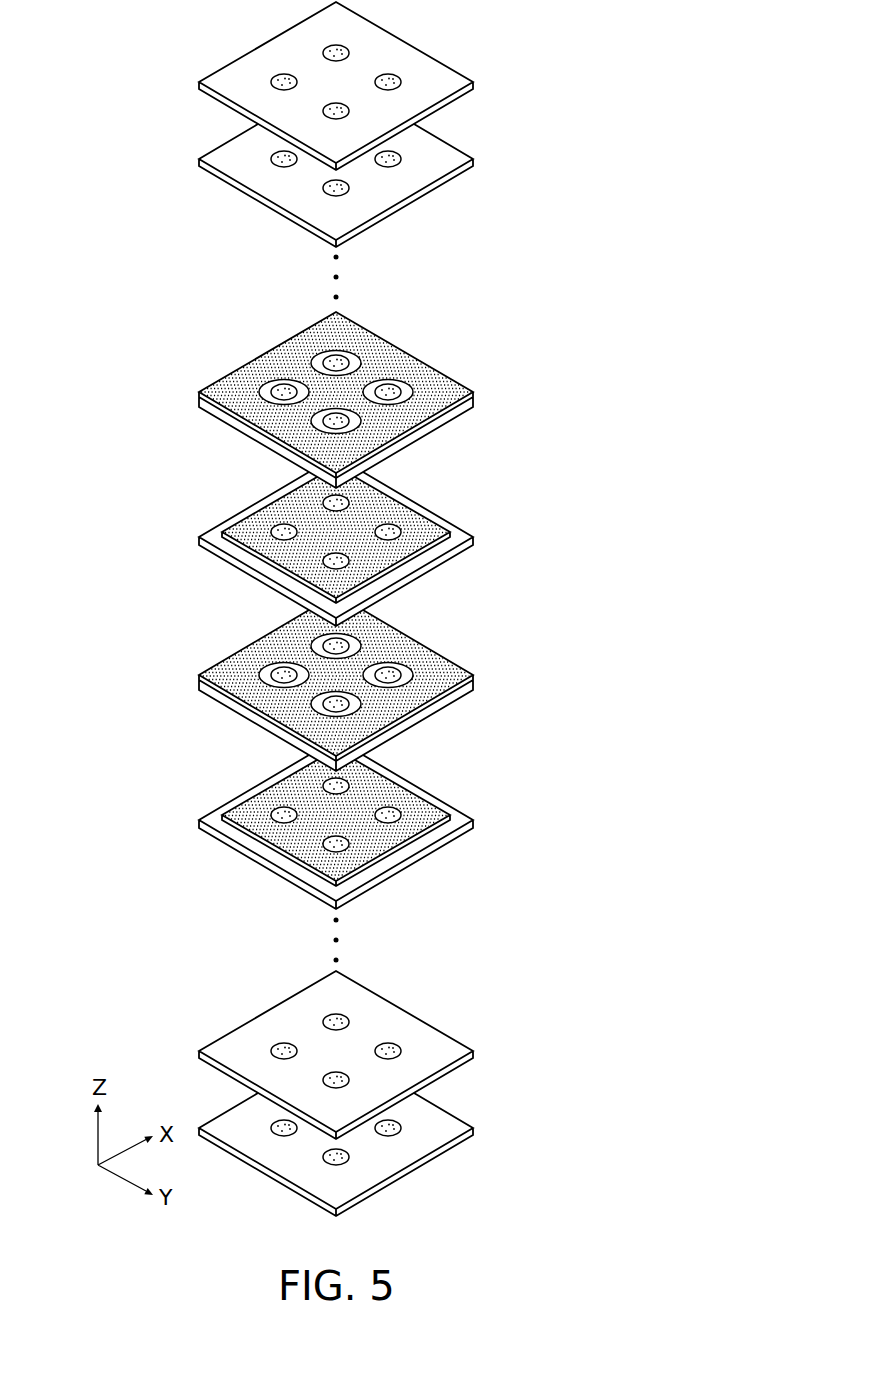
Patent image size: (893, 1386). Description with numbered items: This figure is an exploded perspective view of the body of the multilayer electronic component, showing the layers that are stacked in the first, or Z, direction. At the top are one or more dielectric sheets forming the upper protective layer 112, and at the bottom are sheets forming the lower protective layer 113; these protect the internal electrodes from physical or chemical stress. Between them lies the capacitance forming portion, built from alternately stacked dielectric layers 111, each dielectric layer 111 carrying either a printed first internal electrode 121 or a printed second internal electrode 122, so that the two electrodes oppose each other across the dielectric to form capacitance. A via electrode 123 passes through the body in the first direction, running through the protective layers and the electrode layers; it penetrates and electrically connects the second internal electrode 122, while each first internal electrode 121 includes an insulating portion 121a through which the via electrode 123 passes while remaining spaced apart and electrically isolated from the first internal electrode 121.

The dielectric layer 111 is at (462, 412).
The upper protective layer 112 is at (452, 76).
The lower protective layer 113 is at (452, 1045).
The first internal electrode 121 is at (454, 386).
The insulating portion 121a is at (388, 380).
The second internal electrode 122 is at (441, 522).
The via electrode 123 is at (396, 77).